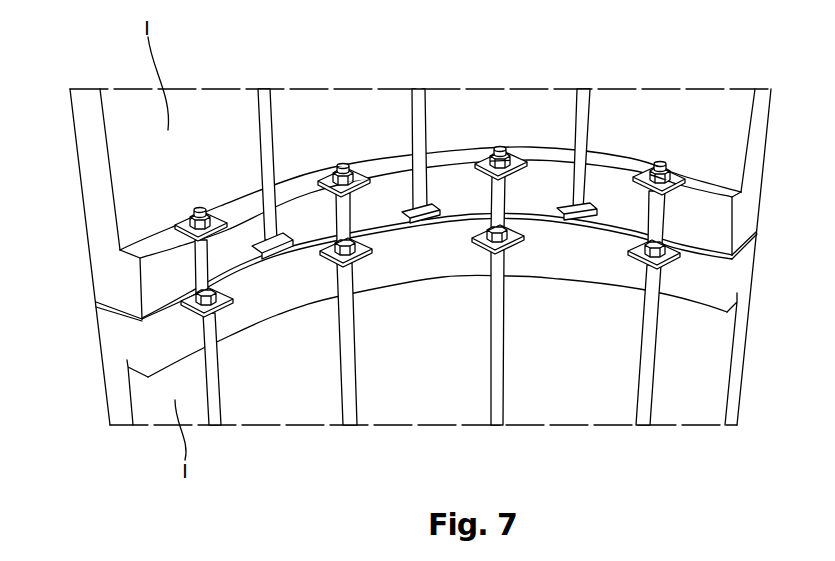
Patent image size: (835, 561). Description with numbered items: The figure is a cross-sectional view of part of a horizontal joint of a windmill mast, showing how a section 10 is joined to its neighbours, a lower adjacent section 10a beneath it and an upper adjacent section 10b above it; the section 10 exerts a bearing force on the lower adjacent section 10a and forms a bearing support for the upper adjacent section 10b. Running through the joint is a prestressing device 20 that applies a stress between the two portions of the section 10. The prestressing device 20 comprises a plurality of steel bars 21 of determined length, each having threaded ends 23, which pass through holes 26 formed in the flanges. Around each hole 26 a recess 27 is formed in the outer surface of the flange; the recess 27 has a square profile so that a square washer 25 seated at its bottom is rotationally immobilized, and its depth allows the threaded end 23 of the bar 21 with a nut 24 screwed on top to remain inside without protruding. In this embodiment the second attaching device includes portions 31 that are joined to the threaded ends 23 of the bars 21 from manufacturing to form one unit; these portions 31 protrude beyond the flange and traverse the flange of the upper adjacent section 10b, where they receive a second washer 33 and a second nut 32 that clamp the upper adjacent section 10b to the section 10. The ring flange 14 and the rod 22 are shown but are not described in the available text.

The section 10 is at (763, 134).
The lower adjacent section 10a is at (157, 392).
The upper adjacent section 10b is at (140, 155).
The annular flange ring 14 is at (190, 277).
The prestressing device 20 is at (704, 253).
The steel bar 21 is at (413, 108).
The threaded rod 22 is at (262, 122).
The threaded end 23 is at (735, 256).
The nut 24 is at (676, 258).
The square washer 25 is at (658, 280).
The hole 26 is at (203, 329).
The recess 27 is at (141, 322).
The portion 31 is at (662, 227).
The second nut 32 is at (652, 165).
The second washer 33 is at (518, 155).